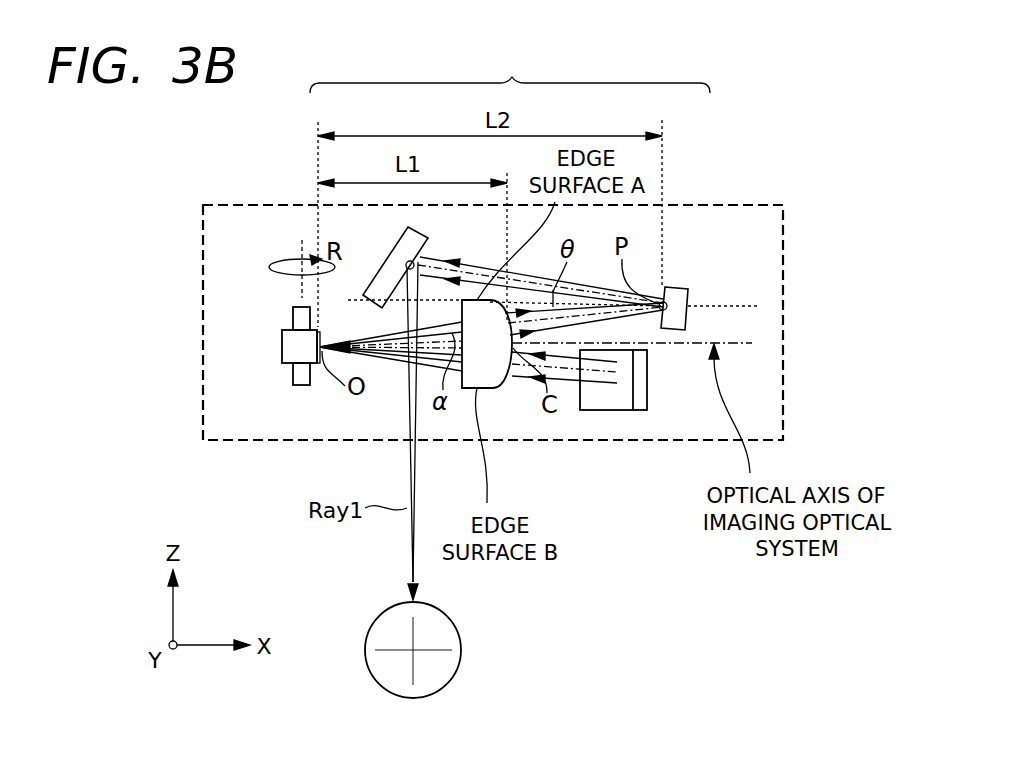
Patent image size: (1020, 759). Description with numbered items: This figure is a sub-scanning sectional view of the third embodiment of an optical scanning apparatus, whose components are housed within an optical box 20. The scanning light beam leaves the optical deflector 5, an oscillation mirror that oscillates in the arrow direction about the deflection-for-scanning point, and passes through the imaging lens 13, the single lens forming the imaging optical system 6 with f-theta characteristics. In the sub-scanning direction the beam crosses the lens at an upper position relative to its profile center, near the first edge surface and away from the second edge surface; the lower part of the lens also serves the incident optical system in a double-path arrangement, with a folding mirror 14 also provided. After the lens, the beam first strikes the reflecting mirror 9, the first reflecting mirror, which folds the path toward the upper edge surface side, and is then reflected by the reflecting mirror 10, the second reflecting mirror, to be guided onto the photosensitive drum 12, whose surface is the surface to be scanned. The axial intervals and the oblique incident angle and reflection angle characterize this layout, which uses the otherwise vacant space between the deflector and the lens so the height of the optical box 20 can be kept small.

The optical deflector 5 is at (282, 345).
The imaging optical system 6 is at (510, 72).
The reflecting mirror 9 is at (676, 290).
The reflecting mirror 10 is at (398, 244).
The photosensitive drum 12 is at (461, 650).
The imaging lens 13 is at (488, 380).
The folding mirror 14 is at (610, 410).
The optical box 20 is at (783, 370).